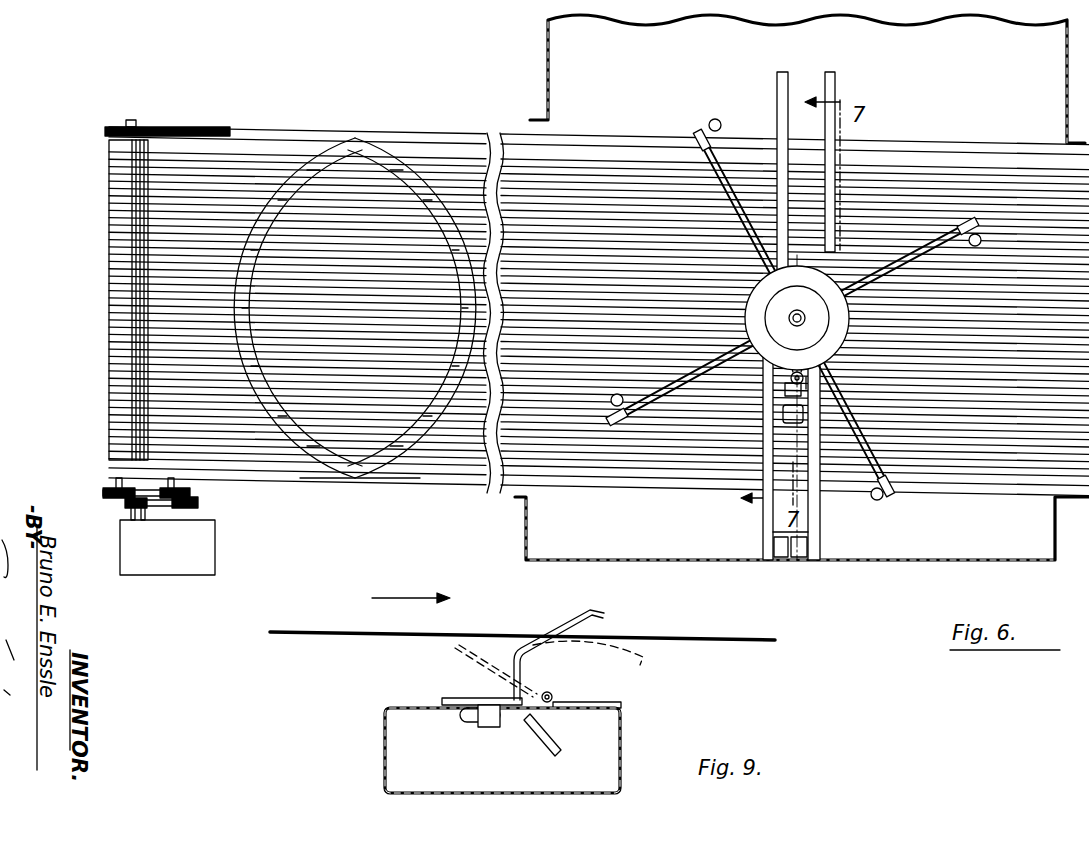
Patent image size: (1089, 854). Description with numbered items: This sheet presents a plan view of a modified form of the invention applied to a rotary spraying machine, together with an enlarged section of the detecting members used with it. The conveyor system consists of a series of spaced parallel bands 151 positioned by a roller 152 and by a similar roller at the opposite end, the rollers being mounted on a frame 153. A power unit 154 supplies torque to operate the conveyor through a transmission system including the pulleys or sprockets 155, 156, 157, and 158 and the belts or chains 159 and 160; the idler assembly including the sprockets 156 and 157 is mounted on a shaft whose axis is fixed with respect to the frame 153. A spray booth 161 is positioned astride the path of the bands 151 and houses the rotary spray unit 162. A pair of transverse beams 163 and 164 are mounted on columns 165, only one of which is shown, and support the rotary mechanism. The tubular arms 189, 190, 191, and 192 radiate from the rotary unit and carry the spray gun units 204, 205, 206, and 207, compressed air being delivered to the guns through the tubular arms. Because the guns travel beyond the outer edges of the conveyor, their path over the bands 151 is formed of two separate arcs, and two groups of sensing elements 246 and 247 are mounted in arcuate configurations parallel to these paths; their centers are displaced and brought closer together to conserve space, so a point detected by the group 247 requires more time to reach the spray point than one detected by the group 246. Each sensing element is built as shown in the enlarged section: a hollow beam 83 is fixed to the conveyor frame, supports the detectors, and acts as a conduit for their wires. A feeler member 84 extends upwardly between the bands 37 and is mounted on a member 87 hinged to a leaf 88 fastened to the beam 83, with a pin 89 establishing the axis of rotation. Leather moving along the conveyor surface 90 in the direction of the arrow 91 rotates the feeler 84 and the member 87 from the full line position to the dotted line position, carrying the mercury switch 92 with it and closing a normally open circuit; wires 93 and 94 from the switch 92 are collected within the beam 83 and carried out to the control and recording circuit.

In FIG. 6, the spaced parallel bands 151 is at (220, 168).
In FIG. 6, the roller 152 is at (109, 149).
In FIG. 6, the frame 153 is at (366, 488).
In FIG. 6, the power unit 154 is at (200, 567).
In FIG. 6, the pulley or sprocket 155 is at (125, 502).
In FIG. 6, the idler sprocket 156 is at (200, 506).
In FIG. 6, the idler sprocket 157 is at (190, 493).
In FIG. 6, the pulley or sprocket 158 is at (108, 490).
In FIG. 6, the belt or chain 159 is at (148, 493).
In FIG. 6, the belt or chain 160 is at (148, 503).
In FIG. 6, the spray booth 161 is at (546, 72).
In FIG. 6, the rotary spray unit 162 is at (851, 326).
In FIG. 6, the transverse beam 163 is at (835, 80).
In FIG. 6, the transverse beam 164 is at (777, 83).
In FIG. 6, the column 165 is at (795, 545).
In FIG. 6, the tubular arm 189 is at (668, 378).
In FIG. 6, the tubular arm 190 is at (700, 153).
In FIG. 6, the tubular arm 191 is at (936, 246).
In FIG. 6, the tubular arm 192 is at (866, 422).
In FIG. 6, the spray gun unit 204 is at (616, 394).
In FIG. 6, the spray gun unit 205 is at (720, 126).
In FIG. 6, the spray gun unit 206 is at (980, 244).
In FIG. 6, the spray gun unit 207 is at (879, 500).
In FIG. 6, the group of sensing elements 246 is at (324, 153).
In FIG. 6, the group of sensing elements 247 is at (402, 150).
In FIG. 9, the band 37 is at (682, 640).
In FIG. 9, the hollow beam 83 is at (621, 742).
In FIG. 9, the feeler member 84 is at (524, 668).
In FIG. 9, the member 87 is at (470, 698).
In FIG. 9, the leaf 88 is at (590, 703).
In FIG. 9, the pin 89 is at (553, 694).
In FIG. 9, the conveyor surface 90 is at (342, 632).
In FIG. 9, the arrow 91 is at (390, 600).
In FIG. 9, the mercury switch 92 is at (468, 722).
In FIG. 9, the wire 93 is at (552, 742).
In FIG. 9, the wire 94 is at (542, 753).